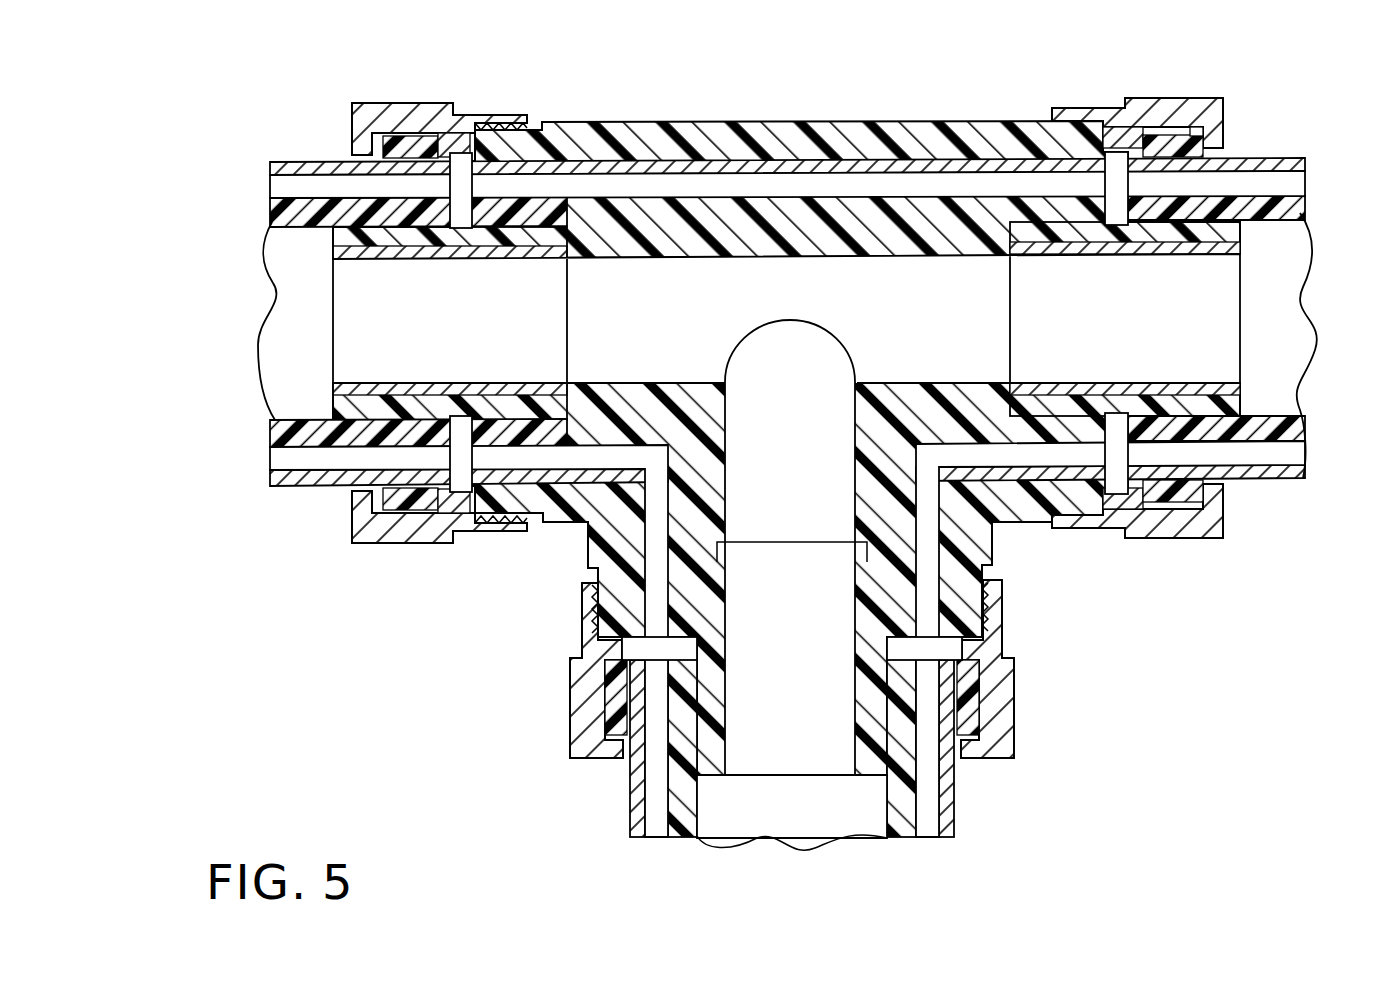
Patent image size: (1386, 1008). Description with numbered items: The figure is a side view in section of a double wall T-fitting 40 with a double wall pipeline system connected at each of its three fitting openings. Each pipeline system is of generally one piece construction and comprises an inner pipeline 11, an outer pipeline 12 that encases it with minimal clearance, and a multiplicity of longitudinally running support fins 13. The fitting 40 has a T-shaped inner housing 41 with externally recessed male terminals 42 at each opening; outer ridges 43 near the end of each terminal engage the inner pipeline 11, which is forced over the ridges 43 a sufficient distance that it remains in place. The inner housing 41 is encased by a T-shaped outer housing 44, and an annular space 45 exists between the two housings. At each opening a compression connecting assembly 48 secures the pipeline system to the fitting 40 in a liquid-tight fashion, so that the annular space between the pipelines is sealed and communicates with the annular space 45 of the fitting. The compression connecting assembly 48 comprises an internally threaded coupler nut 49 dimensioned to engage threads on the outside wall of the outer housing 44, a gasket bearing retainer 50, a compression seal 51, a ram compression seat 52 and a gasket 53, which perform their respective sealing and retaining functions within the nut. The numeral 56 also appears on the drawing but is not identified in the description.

The inner pipeline 11 is at (313, 343).
The outer pipeline 12 is at (1298, 475).
The support fins 13 is at (1227, 458).
The double wall T-fitting 40 is at (807, 437).
The inner housing 41 is at (697, 254).
The male terminals 42 is at (1152, 244).
The outer ridges 43 is at (1218, 249).
The outer housing 44 is at (998, 125).
The annular space 45 is at (700, 124).
The compression connecting assembly 48 is at (1145, 125).
The coupler nut 49 is at (1177, 108).
The gasket bearing retainer 50 is at (1213, 148).
The compression seal 51 is at (1193, 130).
The ram compression seat 52 is at (1145, 128).
The gasket 53 is at (1138, 126).
The washer 56 is at (1205, 127).